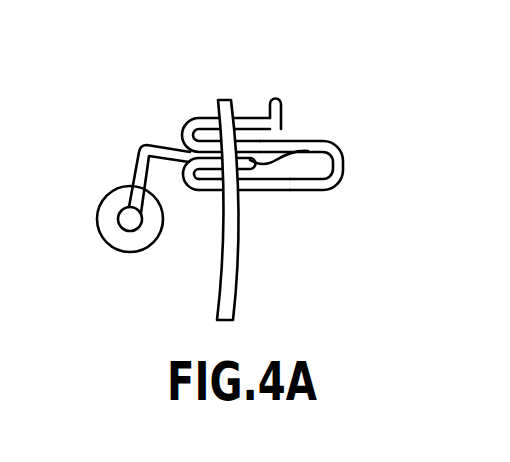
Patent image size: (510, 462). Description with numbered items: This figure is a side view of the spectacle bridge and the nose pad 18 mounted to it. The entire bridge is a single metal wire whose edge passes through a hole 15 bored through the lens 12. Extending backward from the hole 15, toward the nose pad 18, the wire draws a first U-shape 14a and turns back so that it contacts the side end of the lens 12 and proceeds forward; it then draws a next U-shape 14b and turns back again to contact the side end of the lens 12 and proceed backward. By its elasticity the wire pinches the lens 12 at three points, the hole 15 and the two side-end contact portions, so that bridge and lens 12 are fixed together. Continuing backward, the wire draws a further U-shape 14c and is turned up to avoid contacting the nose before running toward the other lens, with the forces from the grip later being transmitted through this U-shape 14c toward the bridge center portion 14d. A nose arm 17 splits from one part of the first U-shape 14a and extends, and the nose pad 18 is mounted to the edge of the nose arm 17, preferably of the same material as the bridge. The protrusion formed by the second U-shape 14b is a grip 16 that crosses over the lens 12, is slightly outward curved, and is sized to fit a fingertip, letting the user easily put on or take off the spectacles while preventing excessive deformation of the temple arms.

The lens 12 is at (238, 265).
The first U-shape 14a is at (198, 191).
The second U-shape 14b is at (340, 165).
The third U-shape 14c is at (190, 117).
The bridge center portion 14d is at (276, 100).
The hole 15 is at (285, 157).
The grip 16 is at (307, 190).
The nose arm 17 is at (141, 156).
The nose pad 18 is at (123, 238).